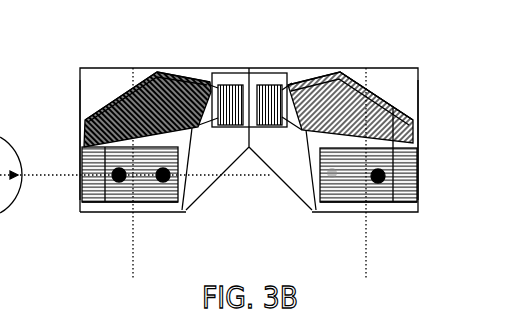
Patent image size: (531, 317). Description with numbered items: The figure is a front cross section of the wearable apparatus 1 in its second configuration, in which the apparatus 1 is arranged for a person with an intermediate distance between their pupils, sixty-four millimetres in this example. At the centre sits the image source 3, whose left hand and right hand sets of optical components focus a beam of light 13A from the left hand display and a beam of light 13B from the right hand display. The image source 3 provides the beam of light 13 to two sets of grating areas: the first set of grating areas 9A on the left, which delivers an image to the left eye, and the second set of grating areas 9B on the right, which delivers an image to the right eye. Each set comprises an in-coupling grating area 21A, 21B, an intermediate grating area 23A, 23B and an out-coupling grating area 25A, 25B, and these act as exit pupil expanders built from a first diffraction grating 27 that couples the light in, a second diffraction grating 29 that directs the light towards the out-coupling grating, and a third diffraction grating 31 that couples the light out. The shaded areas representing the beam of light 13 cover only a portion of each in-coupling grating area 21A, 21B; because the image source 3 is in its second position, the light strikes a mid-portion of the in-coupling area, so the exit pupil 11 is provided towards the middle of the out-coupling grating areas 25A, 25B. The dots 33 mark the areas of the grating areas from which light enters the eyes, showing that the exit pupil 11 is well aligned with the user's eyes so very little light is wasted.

The apparatus 1 is at (418, 105).
The image source 3 is at (272, 73).
The first set of grating areas 9A is at (83, 146).
The second set of grating areas 9B is at (390, 112).
The exit pupil 11 is at (160, 202).
The beam of light 13 is at (183, 77).
The beam of light from the left hand display 13A is at (140, 82).
The beam of light from the right hand display 13B is at (393, 108).
The in-coupling grating area 21A is at (230, 128).
The in-coupling grating area 21B is at (268, 128).
The intermediate grating area 23A is at (81, 97).
The intermediate grating area 23B is at (418, 130).
The out-coupling grating area 25A is at (81, 190).
The out-coupling grating area 25B is at (416, 196).
The first diffraction grating 27 is at (268, 85).
The second diffraction grating 29 is at (118, 98).
The third diffraction grating 31 is at (97, 203).
The dots 33 is at (161, 180).